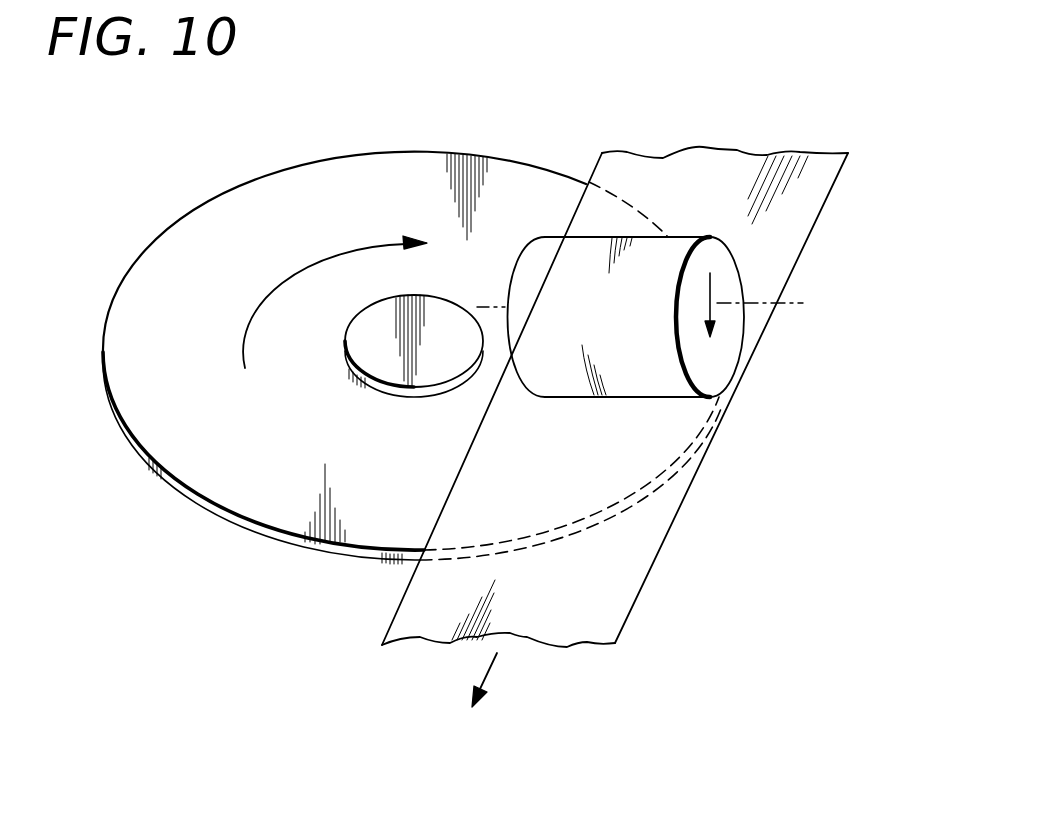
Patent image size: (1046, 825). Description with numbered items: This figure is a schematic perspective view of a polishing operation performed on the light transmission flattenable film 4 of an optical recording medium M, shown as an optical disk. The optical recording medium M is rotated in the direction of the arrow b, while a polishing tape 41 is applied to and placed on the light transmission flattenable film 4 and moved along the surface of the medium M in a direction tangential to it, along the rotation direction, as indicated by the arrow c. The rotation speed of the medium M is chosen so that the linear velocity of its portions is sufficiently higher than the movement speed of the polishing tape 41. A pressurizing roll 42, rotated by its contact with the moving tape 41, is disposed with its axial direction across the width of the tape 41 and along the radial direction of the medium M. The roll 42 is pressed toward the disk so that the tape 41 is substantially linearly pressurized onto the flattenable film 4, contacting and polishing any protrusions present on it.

The light transmission flattenable film 4 is at (403, 196).
The optical recording medium M is at (535, 167).
The pressurizing roll 42 is at (667, 260).
The polishing tape 41 is at (651, 555).
The rotation direction of the optical recording medium b is at (327, 260).
The movement direction of the polishing tape c is at (488, 673).